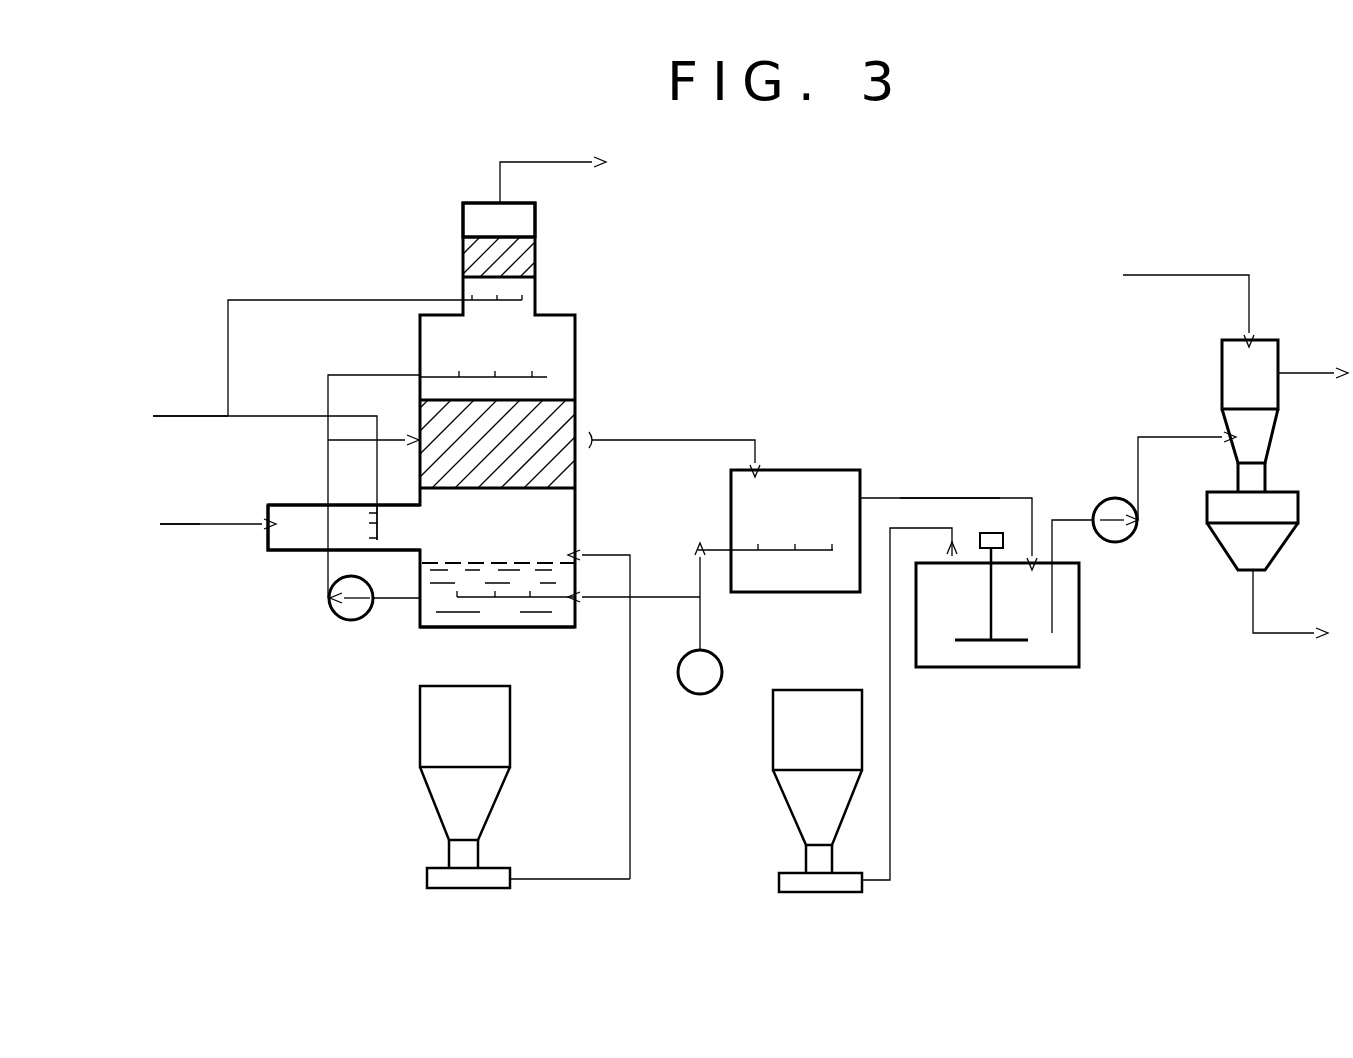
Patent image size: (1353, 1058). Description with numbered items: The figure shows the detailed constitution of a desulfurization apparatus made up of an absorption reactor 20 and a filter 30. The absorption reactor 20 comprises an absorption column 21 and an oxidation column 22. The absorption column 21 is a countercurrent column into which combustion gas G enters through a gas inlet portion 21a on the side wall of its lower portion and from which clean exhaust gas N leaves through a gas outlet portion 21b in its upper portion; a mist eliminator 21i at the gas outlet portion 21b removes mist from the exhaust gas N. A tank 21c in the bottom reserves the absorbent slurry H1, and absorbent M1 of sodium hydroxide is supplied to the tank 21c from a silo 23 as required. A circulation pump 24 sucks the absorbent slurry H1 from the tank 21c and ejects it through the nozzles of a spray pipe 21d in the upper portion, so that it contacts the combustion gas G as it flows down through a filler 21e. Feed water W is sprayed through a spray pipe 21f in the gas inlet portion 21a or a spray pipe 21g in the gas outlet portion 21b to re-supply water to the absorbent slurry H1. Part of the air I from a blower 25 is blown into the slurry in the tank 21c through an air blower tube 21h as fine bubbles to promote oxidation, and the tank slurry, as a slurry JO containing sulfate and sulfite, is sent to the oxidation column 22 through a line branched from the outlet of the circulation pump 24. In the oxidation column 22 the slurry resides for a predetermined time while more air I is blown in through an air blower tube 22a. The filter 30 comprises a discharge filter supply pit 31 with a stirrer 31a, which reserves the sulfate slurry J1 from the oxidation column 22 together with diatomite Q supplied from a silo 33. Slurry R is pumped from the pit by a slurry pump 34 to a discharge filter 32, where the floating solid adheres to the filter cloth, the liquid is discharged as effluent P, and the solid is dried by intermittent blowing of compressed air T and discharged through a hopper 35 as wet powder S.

The absorption reactor 20 is at (323, 213).
The absorption column 21 is at (577, 330).
The gas inlet portion 21a is at (282, 552).
The gas outlet portion 21b is at (537, 218).
The tank 21c is at (540, 629).
The spray pipe 21d is at (447, 373).
The filler 21e is at (548, 400).
The spray pipe 21f is at (379, 532).
The spray pipe 21g is at (523, 296).
The air blower tube 21h is at (486, 600).
The mist eliminator 21i is at (478, 238).
The oxidation column 22 is at (822, 468).
The air blower tube 22a is at (822, 553).
The silo 23 is at (420, 737).
The circulation pump 24 is at (351, 621).
The blower 25 is at (690, 694).
The filter 30 is at (1042, 362).
The discharge filter supply pit 31 is at (1078, 628).
The stirrer 31a is at (965, 643).
The discharge filter 32 is at (1222, 355).
The silo 33 is at (795, 822).
The slurry pump 34 is at (1126, 543).
The hopper 35 is at (1287, 545).
The clean exhaust gas N is at (568, 175).
The feed water W is at (178, 414).
The combustion gas G is at (186, 527).
The slurry JO is at (692, 440).
The sulfate slurry J1 is at (935, 496).
The absorbent slurry H1 is at (535, 558).
The air I is at (702, 632).
The absorbent M1 is at (566, 880).
The diatomite Q is at (890, 813).
The compressed air T is at (1150, 273).
The effluent P is at (1309, 370).
The slurry R is at (1150, 435).
The wet powder S is at (1290, 637).